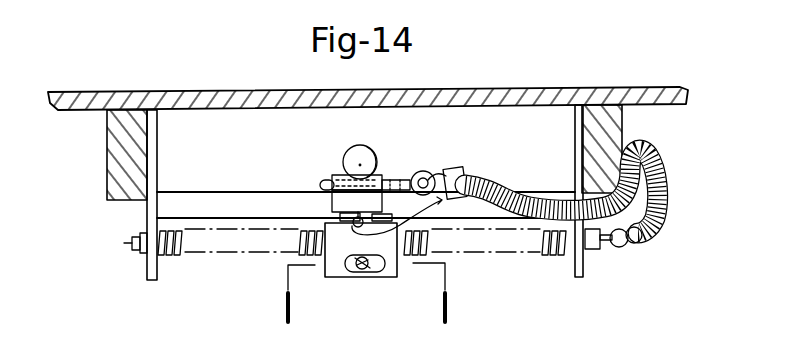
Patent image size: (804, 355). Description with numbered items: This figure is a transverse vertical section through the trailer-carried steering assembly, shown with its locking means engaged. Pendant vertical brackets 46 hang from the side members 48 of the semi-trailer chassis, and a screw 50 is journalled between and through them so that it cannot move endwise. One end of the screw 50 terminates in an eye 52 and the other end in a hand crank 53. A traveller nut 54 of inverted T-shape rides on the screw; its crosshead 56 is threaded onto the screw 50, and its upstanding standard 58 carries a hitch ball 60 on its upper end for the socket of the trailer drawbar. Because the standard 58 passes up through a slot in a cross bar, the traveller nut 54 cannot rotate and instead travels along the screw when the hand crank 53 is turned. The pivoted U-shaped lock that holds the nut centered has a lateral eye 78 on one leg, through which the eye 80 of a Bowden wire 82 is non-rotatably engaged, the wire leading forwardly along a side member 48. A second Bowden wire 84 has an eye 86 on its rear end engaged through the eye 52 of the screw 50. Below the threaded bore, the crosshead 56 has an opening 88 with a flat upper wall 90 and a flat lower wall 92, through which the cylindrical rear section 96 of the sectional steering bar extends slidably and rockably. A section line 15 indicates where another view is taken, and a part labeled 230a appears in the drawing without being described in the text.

The section line 15- 15 is at (365, 297).
The pendant vertical brackets 46 is at (158, 167).
The side members 48 is at (116, 171).
The screw 50 is at (510, 241).
The eye 52 is at (610, 247).
The hand crank 53 is at (135, 251).
The traveller nut 54 is at (350, 291).
The crosshead 56 is at (390, 278).
The standard 58 is at (338, 250).
The hitch ball 60 is at (372, 158).
The lateral eye 78 is at (425, 171).
The eye 80 is at (452, 170).
The Bowden wire 82 is at (504, 168).
The Bowden wire 84 is at (683, 216).
The eye 86 is at (642, 244).
The opening 88 is at (370, 275).
The upper wall 90 is at (358, 258).
The lower wall 92 is at (364, 272).
The rear section 96 is at (432, 263).
The arm 230a is at (330, 222).